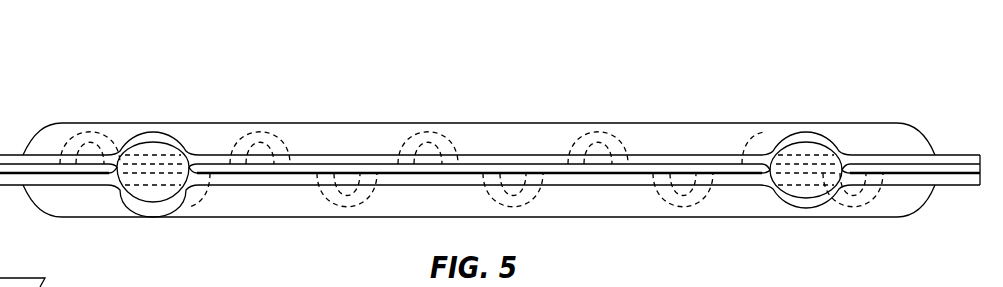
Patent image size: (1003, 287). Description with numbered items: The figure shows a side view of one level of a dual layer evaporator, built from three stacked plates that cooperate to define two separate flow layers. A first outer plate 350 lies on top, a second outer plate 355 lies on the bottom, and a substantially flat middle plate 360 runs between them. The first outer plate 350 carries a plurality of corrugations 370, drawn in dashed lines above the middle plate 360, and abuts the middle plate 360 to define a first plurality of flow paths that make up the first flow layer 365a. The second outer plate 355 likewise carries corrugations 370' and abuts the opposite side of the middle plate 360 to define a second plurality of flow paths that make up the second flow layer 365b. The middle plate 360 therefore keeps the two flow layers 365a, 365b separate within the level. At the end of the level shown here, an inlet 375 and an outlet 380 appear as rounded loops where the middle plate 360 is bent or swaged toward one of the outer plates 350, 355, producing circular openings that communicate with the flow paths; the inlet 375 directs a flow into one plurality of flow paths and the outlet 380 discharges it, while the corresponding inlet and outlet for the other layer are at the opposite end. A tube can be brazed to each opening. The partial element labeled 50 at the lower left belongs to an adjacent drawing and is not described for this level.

The first outer plate 350 is at (878, 153).
The second outer plate 355 is at (951, 178).
The middle plate 360 is at (952, 170).
The first flow layer 365a is at (600, 148).
The second flow layer 365b is at (685, 208).
The corrugations 370 is at (412, 122).
The corrugations 370' is at (535, 216).
The inlet 375 is at (805, 150).
The outlet 380 is at (152, 150).
The catheter 50 is at (12, 286).